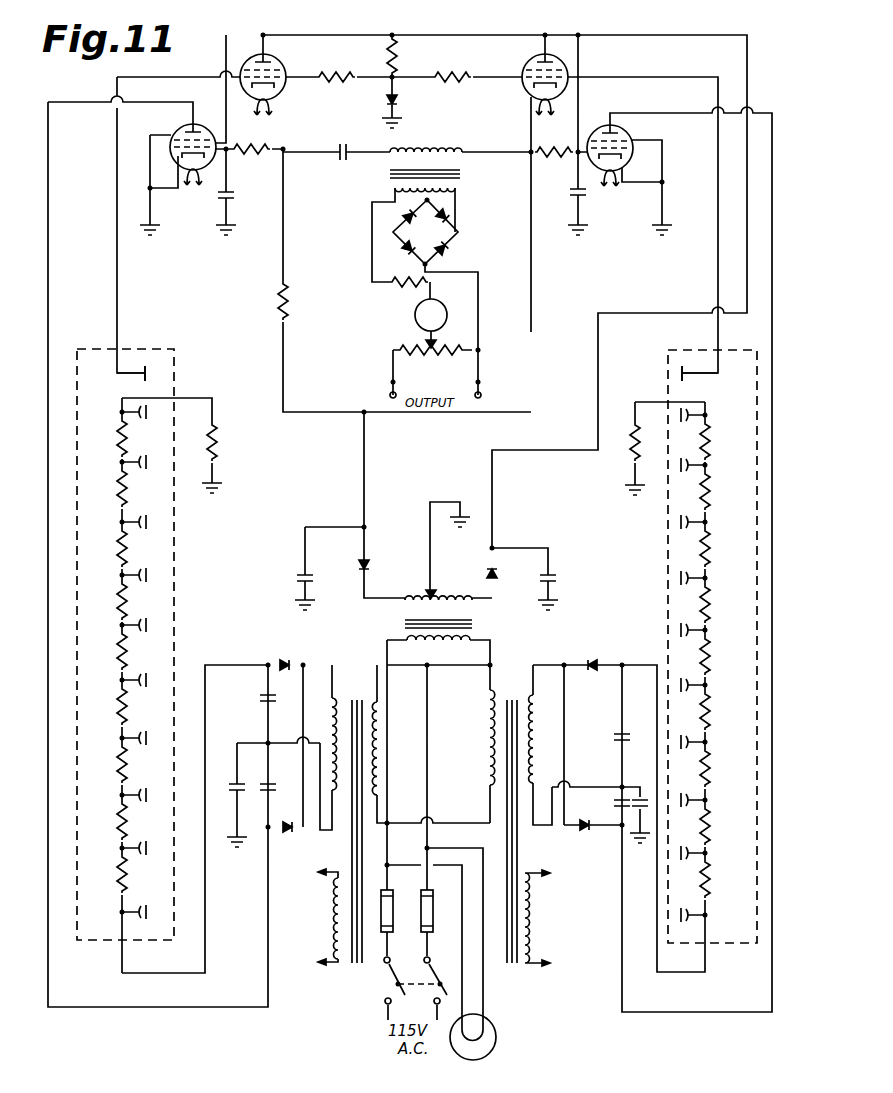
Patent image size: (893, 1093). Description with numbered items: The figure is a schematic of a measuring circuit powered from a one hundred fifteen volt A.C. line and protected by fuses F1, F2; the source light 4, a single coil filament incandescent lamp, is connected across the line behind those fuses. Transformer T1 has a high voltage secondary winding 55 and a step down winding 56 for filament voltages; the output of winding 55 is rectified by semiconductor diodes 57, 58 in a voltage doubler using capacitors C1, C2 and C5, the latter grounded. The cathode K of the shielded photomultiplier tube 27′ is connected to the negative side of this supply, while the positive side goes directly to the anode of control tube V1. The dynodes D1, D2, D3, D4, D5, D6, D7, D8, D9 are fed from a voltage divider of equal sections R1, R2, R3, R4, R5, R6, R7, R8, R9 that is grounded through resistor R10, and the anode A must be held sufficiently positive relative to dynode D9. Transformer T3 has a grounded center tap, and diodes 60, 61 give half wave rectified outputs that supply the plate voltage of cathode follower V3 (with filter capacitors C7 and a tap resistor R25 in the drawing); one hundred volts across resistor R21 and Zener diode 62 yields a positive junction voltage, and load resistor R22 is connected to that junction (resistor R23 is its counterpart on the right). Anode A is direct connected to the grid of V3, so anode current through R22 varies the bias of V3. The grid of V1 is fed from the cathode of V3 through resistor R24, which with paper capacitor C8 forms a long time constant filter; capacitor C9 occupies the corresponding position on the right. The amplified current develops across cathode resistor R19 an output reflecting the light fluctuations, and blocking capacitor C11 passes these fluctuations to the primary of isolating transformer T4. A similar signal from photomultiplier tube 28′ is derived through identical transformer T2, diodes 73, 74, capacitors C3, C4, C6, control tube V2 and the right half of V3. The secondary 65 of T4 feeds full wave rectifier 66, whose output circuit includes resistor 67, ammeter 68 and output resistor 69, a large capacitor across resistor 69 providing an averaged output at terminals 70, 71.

The control tube V1 is at (186, 136).
The control tube V2 is at (610, 149).
The cathode follower tube V3 is at (400, 75).
The resistor R21 is at (411, 56).
The load resistor R22 is at (335, 67).
The resistor R23 is at (448, 78).
The resistor R24 is at (238, 157).
The resistor R25 is at (568, 158).
The cathode resistor R19 is at (278, 306).
The resistor R10 is at (218, 445).
The voltage divider section R1 is at (415, 876).
The voltage divider section R2 is at (415, 823).
The voltage divider section R3 is at (415, 766).
The voltage divider section R4 is at (415, 708).
The voltage divider section R5 is at (415, 653).
The voltage divider section R6 is at (415, 602).
The voltage divider section R7 is at (415, 547).
The voltage divider section R8 is at (415, 489).
The voltage divider section R9 is at (415, 438).
The dynode D1 is at (413, 860).
The dynode D2 is at (413, 807).
The dynode D3 is at (413, 750).
The dynode D4 is at (413, 692).
The dynode D5 is at (413, 638).
The dynode D6 is at (413, 587).
The dynode D7 is at (413, 532).
The dynode D8 is at (413, 473).
The dynode D9 is at (413, 423).
The cathode K is at (413, 923).
The anode A is at (417, 366).
The capacitor C1 is at (258, 702).
The capacitor C2 is at (276, 801).
The capacitor C3 is at (612, 740).
The capacitor C4 is at (612, 805).
The capacitor C5 is at (232, 804).
The capacitor C6 is at (648, 796).
The capacitor C7 is at (294, 578).
The paper capacitor C8 is at (236, 196).
The capacitor C9 is at (570, 194).
The blocking capacitor C11 is at (344, 146).
The transformer T1 is at (364, 698).
The transformer T2 is at (528, 696).
The transformer T3 is at (400, 624).
The output transformer T4 is at (466, 185).
The fuse F1 is at (392, 892).
The fuse F2 is at (432, 892).
The source light 4 is at (497, 1034).
The high voltage secondary winding 55 is at (328, 718).
The step down winding 56 is at (330, 920).
The semiconductor diode 57 is at (296, 660).
The semiconductor diode 58 is at (282, 834).
The diode 60 is at (488, 574).
The diode 61 is at (358, 562).
The Zener diode 62 is at (398, 102).
The secondary 65 is at (390, 188).
The full wave rectifier 66 is at (425, 232).
The resistor 67 is at (402, 288).
The ammeter 68 is at (438, 302).
The output resistor 69 is at (440, 340).
The output terminal 70 is at (388, 395).
The output terminal 71 is at (482, 394).
The diode 73 is at (588, 658).
The diode 74 is at (586, 832).
The photomultiplier tube 27′ is at (174, 540).
The photomultiplier tube 28′ is at (664, 512).